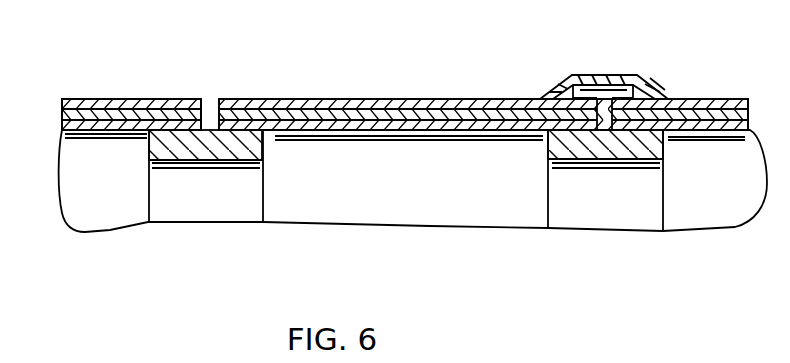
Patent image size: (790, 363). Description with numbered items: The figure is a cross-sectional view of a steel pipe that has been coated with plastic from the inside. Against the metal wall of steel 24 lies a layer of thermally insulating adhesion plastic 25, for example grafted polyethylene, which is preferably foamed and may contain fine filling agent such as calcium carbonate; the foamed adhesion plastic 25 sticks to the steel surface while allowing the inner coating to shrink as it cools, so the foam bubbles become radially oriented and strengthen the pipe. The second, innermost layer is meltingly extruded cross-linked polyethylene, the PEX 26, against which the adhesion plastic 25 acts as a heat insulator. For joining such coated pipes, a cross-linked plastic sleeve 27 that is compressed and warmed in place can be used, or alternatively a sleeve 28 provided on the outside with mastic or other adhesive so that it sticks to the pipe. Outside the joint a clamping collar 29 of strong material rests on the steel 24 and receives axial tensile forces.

The steel 24 is at (138, 102).
The adhesion plastic 25 is at (62, 105).
The PEX 26 is at (383, 125).
The cross-linked plastic sleeve 27 is at (202, 143).
The sleeve 28 is at (590, 145).
The clamping collar 29 is at (602, 82).